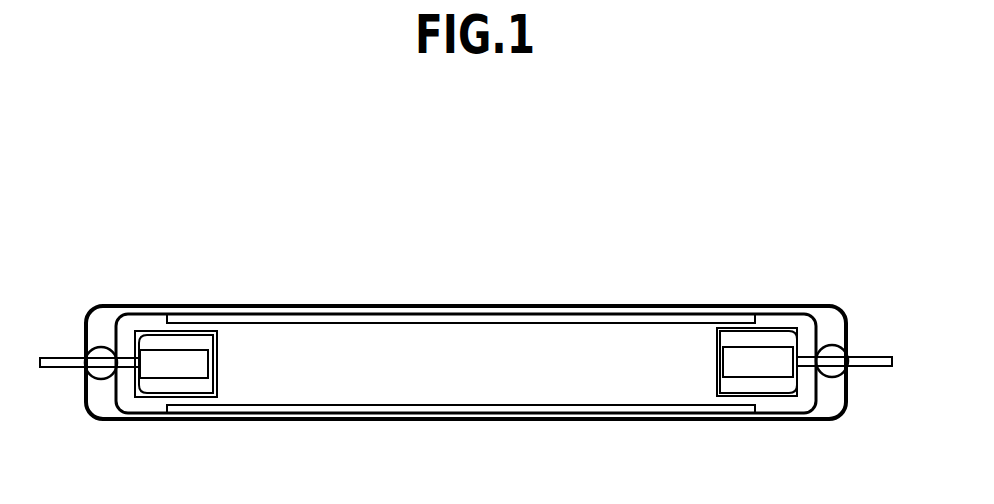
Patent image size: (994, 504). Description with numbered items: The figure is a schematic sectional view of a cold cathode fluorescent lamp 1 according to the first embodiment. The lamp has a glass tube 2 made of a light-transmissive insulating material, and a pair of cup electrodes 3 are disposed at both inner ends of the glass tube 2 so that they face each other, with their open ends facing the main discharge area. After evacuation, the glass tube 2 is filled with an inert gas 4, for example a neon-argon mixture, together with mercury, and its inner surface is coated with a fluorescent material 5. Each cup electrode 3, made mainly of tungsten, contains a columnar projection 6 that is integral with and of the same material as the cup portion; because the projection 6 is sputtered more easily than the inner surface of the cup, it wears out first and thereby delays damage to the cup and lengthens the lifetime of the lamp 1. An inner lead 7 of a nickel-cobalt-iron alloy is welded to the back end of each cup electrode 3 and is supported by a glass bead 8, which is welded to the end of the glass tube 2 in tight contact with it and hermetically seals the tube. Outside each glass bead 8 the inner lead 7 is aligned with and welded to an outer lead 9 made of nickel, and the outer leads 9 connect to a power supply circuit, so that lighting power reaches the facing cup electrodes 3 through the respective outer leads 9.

The cold cathode fluorescent lamp 1 is at (488, 260).
The glass tube 2 is at (273, 305).
The cup electrode 3 is at (140, 332).
The inert gas 4 is at (442, 333).
The fluorescent material 5 is at (348, 317).
The columnar projection 6 is at (185, 352).
The inner lead 7 is at (808, 366).
The glass bead 8 is at (828, 345).
The outer lead 9 is at (871, 355).